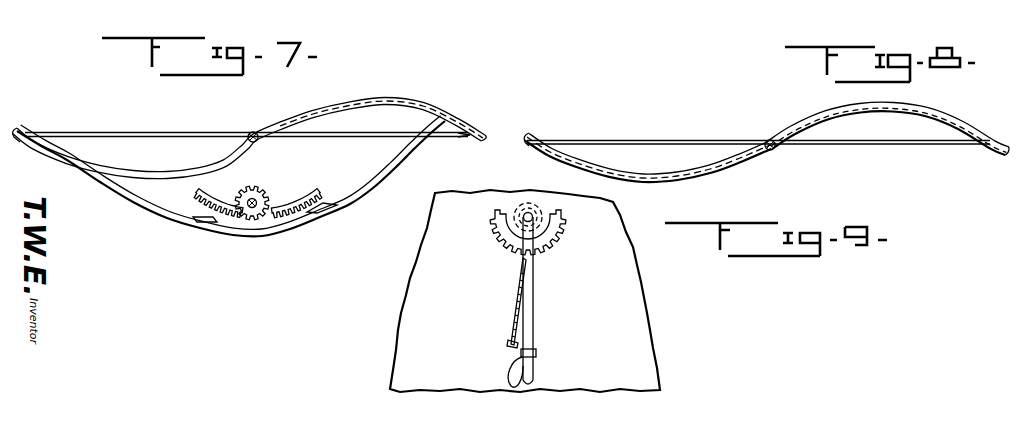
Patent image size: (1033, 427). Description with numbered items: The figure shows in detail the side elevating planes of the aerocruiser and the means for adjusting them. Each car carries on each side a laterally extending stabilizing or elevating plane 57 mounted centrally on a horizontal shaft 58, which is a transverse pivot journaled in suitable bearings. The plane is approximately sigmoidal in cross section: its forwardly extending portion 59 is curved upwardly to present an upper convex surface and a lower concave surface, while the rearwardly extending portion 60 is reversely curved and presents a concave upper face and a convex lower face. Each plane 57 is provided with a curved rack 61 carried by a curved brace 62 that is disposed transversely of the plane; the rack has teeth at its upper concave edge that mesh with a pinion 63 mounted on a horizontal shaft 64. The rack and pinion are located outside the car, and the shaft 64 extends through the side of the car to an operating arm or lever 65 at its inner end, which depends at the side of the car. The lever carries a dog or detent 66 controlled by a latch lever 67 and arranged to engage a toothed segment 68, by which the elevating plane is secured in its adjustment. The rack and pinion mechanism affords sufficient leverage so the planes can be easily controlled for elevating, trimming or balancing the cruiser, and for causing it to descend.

In FIG. 7, the elevating plane 57 is at (281, 120).
In FIG. 8, the elevating plane 57 is at (704, 172).
In FIG. 7, the horizontal shaft 58 is at (257, 140).
In FIG. 8, the horizontal shaft 58 is at (770, 148).
In FIG. 7, the forwardly extending portion 59 is at (360, 100).
In FIG. 8, the forwardly extending portion 59 is at (907, 107).
In FIG. 7, the rearwardly extending portion 60 is at (147, 173).
In FIG. 7, the curved rack 61 is at (317, 200).
In FIG. 7, the curved brace 62 is at (183, 232).
In FIG. 7, the pinion 63 is at (238, 193).
In FIG. 7, the horizontal shaft 64 is at (252, 208).
In FIG. 9, the operating arm 65 is at (535, 317).
In FIG. 9, the dog 66 is at (523, 268).
In FIG. 9, the latch lever 67 is at (537, 367).
In FIG. 9, the toothed segment 68 is at (493, 237).